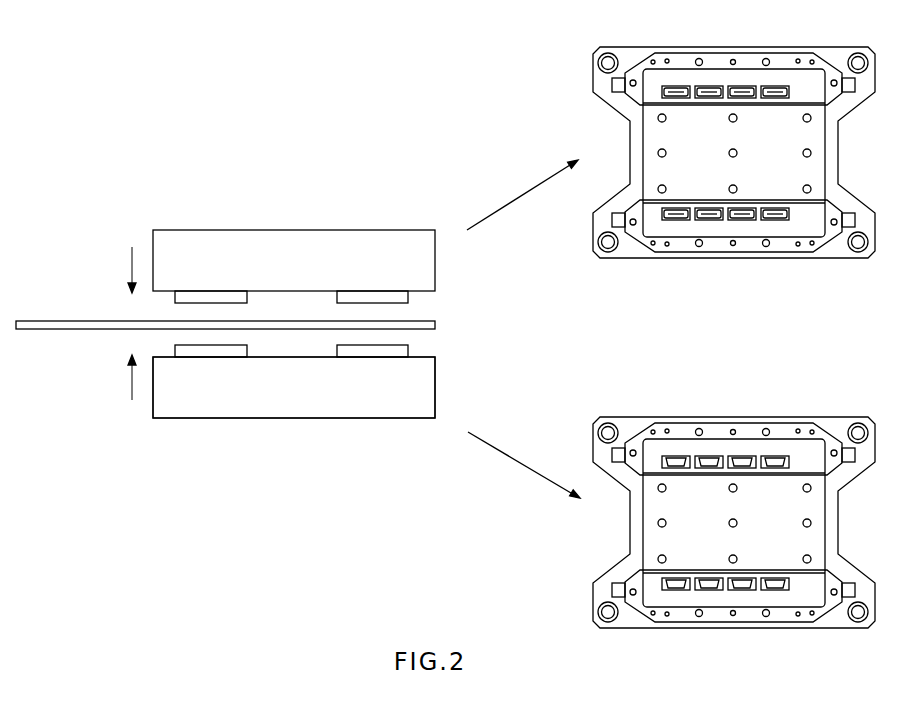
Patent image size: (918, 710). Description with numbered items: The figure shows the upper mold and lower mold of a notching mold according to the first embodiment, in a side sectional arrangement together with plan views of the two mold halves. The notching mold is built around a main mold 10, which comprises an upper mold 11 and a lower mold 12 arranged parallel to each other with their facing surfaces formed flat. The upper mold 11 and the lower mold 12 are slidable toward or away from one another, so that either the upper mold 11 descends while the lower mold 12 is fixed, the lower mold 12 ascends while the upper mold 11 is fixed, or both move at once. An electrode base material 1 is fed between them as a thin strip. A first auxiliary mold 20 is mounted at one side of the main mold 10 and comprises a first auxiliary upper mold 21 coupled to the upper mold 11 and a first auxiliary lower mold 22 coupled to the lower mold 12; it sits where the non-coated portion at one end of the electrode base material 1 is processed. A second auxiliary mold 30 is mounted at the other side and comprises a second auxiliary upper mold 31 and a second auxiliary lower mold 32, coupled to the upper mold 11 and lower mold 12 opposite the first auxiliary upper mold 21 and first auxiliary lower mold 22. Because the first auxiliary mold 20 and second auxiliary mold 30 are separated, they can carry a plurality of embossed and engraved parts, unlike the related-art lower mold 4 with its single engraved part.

The electrode base material 1 is at (44, 320).
The lower mold 4 is at (288, 408).
The main mold 10 is at (522, 337).
The upper mold 11 is at (426, 265).
The lower mold 12 is at (521, 492).
The first auxiliary mold 20 is at (430, 240).
The first auxiliary upper mold 21 is at (176, 296).
The first auxiliary lower mold 22 is at (176, 350).
The second auxiliary mold 30 is at (564, 406).
The second auxiliary upper mold 31 is at (366, 295).
The second auxiliary lower mold 32 is at (338, 352).